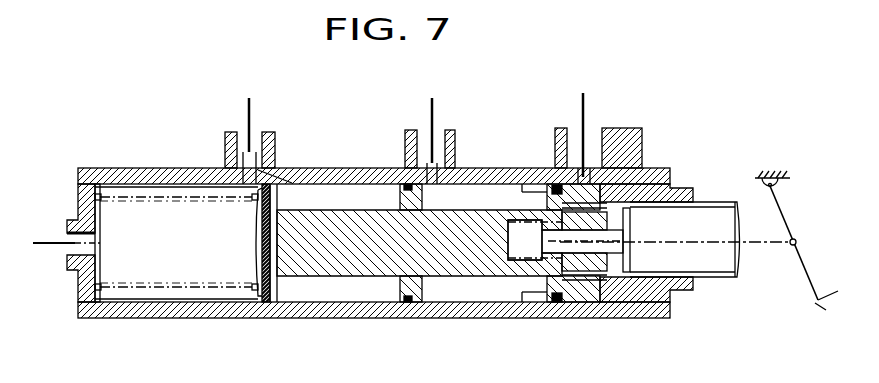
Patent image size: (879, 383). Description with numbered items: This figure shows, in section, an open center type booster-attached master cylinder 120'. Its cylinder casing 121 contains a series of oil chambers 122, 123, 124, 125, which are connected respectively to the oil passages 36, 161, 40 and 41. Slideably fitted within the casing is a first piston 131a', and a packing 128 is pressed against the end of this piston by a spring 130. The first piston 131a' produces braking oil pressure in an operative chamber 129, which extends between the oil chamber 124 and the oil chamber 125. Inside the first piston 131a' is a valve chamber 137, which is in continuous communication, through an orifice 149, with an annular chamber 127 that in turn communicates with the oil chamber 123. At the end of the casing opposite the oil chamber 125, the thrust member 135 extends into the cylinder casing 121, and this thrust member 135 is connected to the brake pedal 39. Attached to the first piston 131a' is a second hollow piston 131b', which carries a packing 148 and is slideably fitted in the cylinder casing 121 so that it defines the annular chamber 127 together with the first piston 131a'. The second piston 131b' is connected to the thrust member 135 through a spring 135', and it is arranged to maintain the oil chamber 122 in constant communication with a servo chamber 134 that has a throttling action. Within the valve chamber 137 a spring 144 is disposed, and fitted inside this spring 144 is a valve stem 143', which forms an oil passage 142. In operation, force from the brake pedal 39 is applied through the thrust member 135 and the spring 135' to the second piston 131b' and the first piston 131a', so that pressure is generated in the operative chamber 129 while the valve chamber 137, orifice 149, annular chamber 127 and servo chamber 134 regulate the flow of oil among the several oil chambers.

The open center type booster-attached master cylinder 120' is at (435, 210).
The cylinder casing 121 is at (335, 167).
The oil chamber 122 is at (555, 186).
The oil chamber 123 is at (448, 198).
The oil chamber 124 is at (262, 132).
The oil chamber 125 is at (96, 250).
The annular chamber 127 is at (523, 183).
The packing 128 is at (262, 268).
The operative chamber 129 is at (124, 322).
The spring 130 is at (123, 200).
The first piston 131a' is at (419, 268).
The second hollow piston 131b' is at (555, 268).
The servo chamber 134 is at (622, 190).
The thrust member 135 is at (676, 221).
The spring 135' is at (654, 238).
The valve chamber 137 is at (512, 243).
The oil passage 142 is at (632, 245).
The valve stem 143' is at (608, 276).
The spring 144 is at (523, 270).
The packing 148 is at (560, 186).
The orifice 149 is at (513, 232).
The oil passage 161 is at (437, 103).
The oil passage 36 is at (587, 104).
The brake pedal 39 is at (803, 257).
The oil passage 40 is at (252, 112).
The oil passage 41 is at (55, 234).